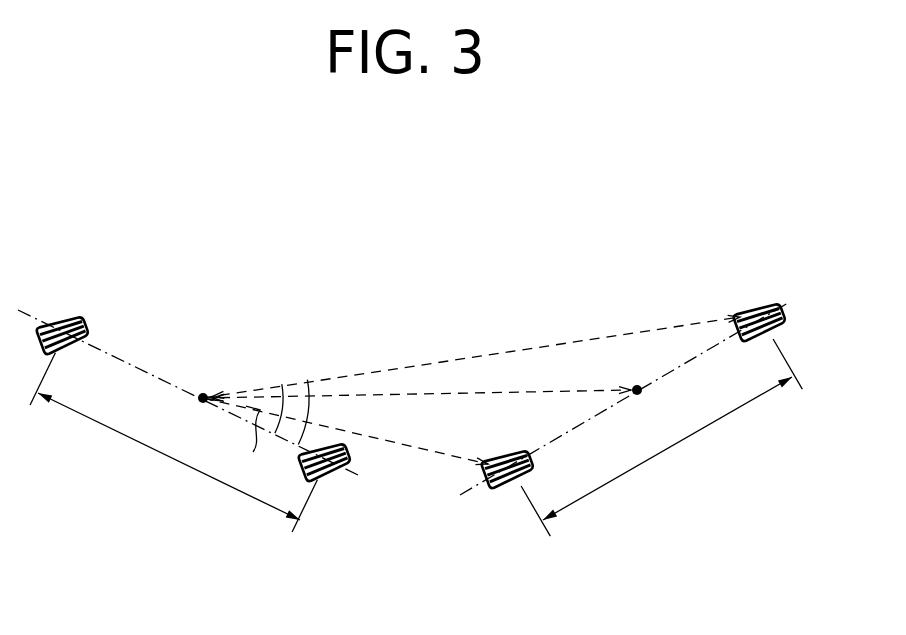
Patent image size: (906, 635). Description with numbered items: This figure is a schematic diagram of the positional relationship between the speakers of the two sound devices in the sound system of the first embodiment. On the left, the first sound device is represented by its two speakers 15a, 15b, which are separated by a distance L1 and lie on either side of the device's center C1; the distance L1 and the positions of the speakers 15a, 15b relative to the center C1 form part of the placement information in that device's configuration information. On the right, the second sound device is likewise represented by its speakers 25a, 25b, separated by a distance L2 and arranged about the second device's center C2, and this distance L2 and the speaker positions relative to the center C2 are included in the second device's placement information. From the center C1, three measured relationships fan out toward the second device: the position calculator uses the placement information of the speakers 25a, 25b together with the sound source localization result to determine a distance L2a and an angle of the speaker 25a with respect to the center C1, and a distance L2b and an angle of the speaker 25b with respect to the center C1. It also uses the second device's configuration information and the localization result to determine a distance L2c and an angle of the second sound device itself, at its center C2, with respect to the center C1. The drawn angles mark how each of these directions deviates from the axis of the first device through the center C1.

The speaker 15a is at (80, 317).
The speaker 15b is at (330, 483).
The speaker 25a is at (497, 488).
The speaker 25b is at (757, 302).
The center of the sound device C1 is at (201, 381).
The center of the sound device C2 is at (636, 374).
The distance L1 is at (173, 442).
The distance L2 is at (661, 437).
The distance L2a is at (345, 429).
The distance L2b is at (471, 356).
The distance L2c is at (417, 382).